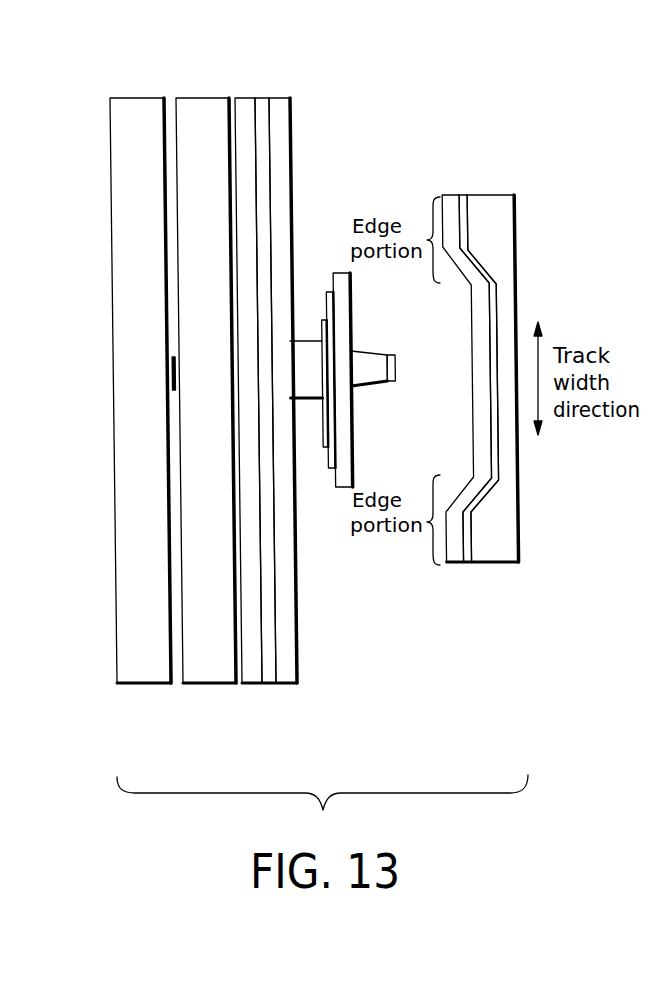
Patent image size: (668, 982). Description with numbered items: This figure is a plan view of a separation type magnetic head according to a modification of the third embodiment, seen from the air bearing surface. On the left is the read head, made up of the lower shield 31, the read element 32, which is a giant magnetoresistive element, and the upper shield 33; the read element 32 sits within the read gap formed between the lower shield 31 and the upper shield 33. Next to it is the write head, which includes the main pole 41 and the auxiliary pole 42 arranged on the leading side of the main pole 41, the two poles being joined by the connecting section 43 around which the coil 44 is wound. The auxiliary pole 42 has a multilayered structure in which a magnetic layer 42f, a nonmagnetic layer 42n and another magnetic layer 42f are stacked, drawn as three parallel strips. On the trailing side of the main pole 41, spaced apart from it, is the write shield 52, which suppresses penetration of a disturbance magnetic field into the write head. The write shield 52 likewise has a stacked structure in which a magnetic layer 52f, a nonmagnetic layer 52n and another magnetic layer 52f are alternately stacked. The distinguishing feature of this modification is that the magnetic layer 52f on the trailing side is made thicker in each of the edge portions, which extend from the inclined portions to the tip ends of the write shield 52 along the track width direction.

The lower shield 31 is at (143, 672).
The read element 32 is at (168, 377).
The upper shield 33 is at (206, 672).
The main pole 41 is at (383, 357).
The auxiliary pole 42 is at (284, 706).
The magnetic layer 42f is at (247, 98).
The nonmagnetic layer 42n is at (263, 98).
The connecting section 43 is at (307, 350).
The coil 44 is at (343, 440).
The write shield 52 is at (476, 585).
The magnetic layer 52f is at (450, 197).
The nonmagnetic layer 52n is at (465, 195).